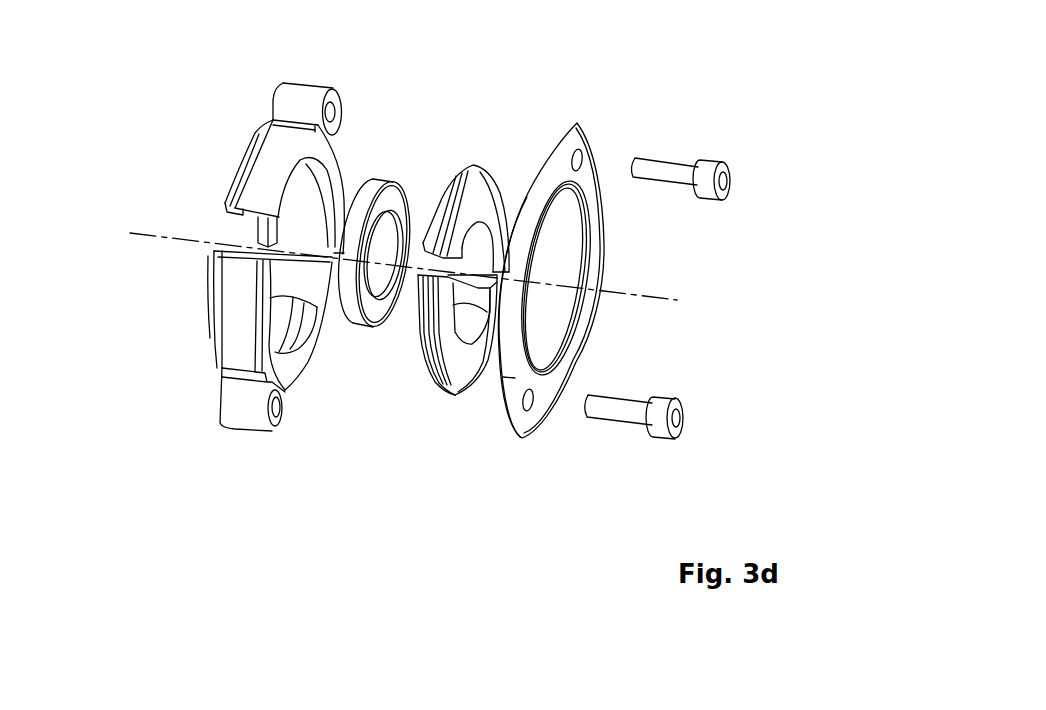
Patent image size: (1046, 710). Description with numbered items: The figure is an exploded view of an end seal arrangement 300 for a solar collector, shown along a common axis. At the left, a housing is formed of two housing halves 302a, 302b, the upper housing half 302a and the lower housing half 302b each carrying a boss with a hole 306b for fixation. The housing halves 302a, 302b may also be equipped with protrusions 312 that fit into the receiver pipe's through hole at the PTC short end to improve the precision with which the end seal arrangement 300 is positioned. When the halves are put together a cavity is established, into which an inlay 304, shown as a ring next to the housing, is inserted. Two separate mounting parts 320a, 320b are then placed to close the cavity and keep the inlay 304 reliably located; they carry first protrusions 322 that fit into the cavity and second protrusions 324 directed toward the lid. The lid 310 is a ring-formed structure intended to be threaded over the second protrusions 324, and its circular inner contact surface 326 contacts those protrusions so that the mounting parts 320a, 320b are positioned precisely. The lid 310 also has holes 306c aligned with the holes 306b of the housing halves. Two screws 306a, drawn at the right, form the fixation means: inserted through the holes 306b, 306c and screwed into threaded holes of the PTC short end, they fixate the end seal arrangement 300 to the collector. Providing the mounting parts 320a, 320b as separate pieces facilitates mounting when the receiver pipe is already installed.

The end seal arrangement 300 is at (124, 65).
The housing half 302a is at (289, 113).
The housing half 302b is at (226, 347).
The inlay 304 is at (393, 190).
The screws 306a is at (727, 182).
The holes 306b is at (331, 116).
The holes 306c is at (582, 158).
The lid 310 is at (556, 145).
The protrusions 312 is at (216, 300).
The mounting part 320a is at (468, 174).
The mounting part 320b is at (445, 396).
The first protrusions 322 is at (418, 322).
The second protrusions 324 is at (486, 198).
The circular inner contact surface 326 is at (585, 268).